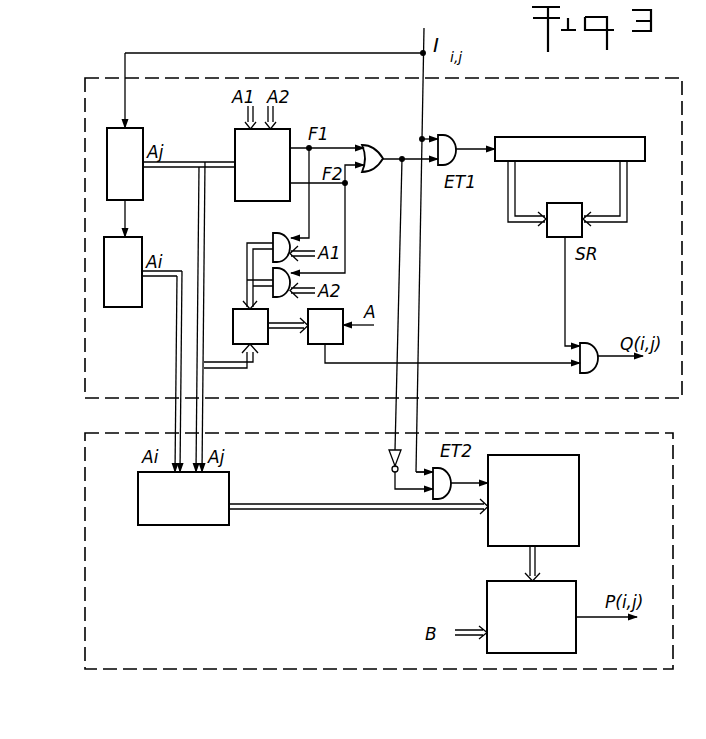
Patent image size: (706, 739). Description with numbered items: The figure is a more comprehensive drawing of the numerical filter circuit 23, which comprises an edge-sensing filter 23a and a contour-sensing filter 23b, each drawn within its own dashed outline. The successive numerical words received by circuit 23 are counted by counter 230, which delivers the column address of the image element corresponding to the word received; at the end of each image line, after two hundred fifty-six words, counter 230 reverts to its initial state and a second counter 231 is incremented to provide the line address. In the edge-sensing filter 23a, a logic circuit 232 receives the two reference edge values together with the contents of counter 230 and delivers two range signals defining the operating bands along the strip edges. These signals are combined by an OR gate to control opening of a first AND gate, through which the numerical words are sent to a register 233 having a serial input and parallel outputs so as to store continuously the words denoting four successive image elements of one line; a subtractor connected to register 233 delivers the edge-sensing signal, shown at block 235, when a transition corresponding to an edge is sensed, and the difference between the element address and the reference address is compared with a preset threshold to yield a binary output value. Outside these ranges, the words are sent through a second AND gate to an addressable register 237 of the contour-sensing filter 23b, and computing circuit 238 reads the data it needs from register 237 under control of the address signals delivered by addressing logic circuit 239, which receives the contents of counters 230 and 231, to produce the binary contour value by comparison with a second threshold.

The filtering circuit 23 is at (88, 416).
The edge-sensing filter 23a is at (500, 314).
The contour-sensing filter 23b is at (289, 604).
The counter 230 is at (138, 133).
The analog counter 231 is at (137, 245).
The logic circuit 232 is at (266, 175).
The register 233 is at (567, 148).
The SR flip-flop 235 is at (566, 216).
The addressable register 237 is at (537, 507).
The computing circuit 238 is at (535, 627).
The addressing logic circuit 239 is at (188, 507).